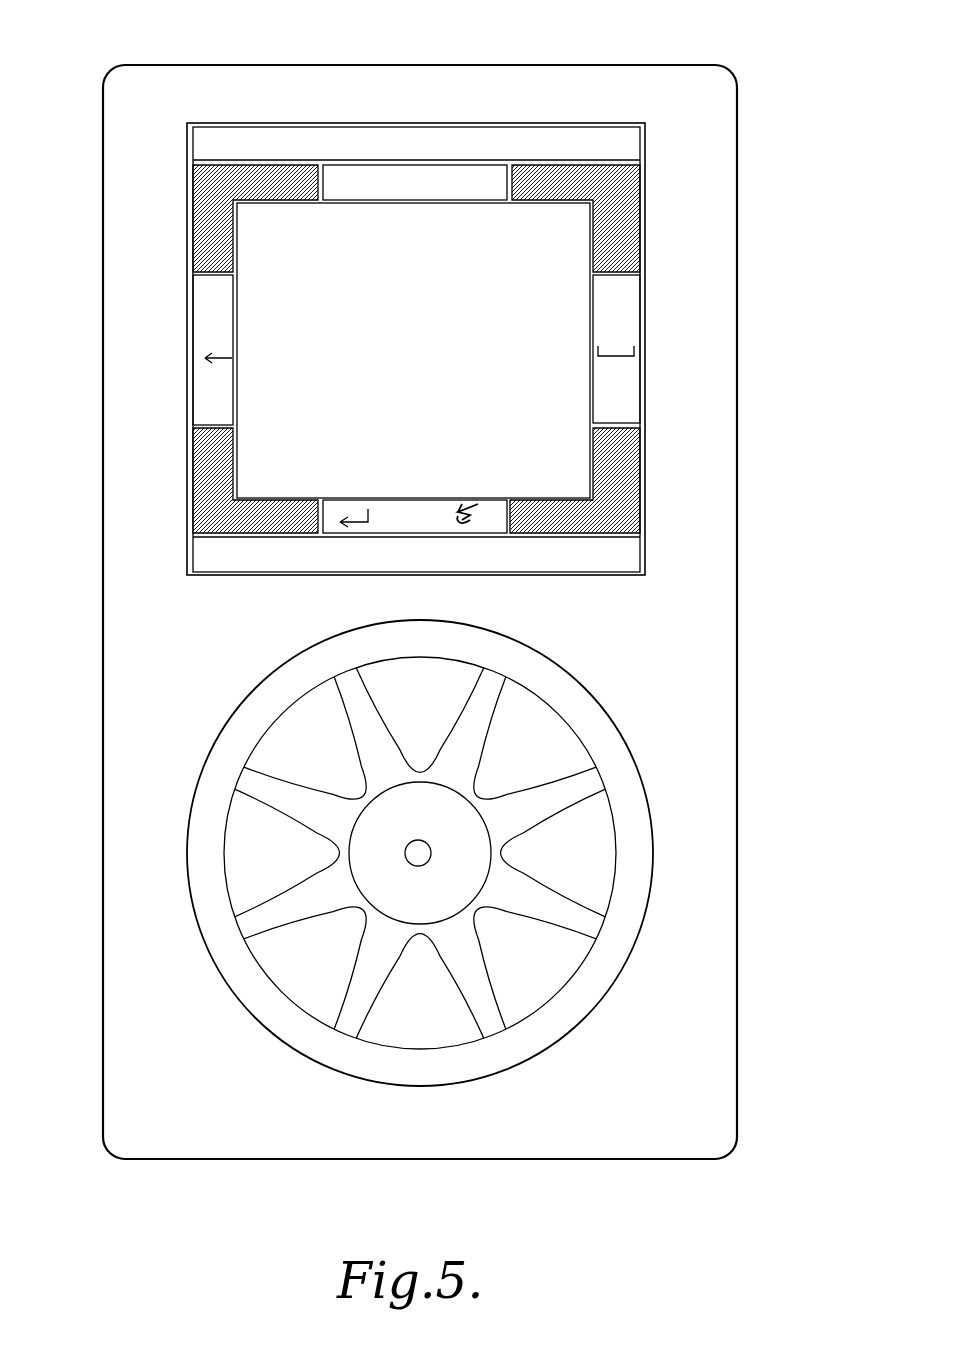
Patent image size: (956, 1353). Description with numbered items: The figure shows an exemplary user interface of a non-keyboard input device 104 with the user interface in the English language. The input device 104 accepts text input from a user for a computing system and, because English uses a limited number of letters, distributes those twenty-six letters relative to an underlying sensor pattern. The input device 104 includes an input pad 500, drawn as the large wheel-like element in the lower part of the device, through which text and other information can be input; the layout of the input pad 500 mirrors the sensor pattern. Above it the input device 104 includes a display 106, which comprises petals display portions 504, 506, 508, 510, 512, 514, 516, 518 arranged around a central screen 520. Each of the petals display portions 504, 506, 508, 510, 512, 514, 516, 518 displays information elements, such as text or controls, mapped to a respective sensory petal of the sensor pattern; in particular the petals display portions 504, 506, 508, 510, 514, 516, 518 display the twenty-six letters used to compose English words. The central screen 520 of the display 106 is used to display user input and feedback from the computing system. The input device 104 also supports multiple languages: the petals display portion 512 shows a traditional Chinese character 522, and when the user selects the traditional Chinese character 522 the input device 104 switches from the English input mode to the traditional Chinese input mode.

The input device 104 is at (637, 64).
The display 106 is at (524, 124).
The input pad 500 is at (618, 737).
The petals display portion 504 is at (410, 172).
The petals display portion 506 is at (624, 172).
The petals display portion 508 is at (625, 327).
The petals display portion 510 is at (632, 484).
The petals display portion 512 is at (485, 523).
The petals display portion 514 is at (200, 500).
The petals display portion 516 is at (208, 320).
The petals display portion 518 is at (200, 195).
The central screen 520 is at (297, 480).
The traditional Chinese character 522 is at (478, 497).